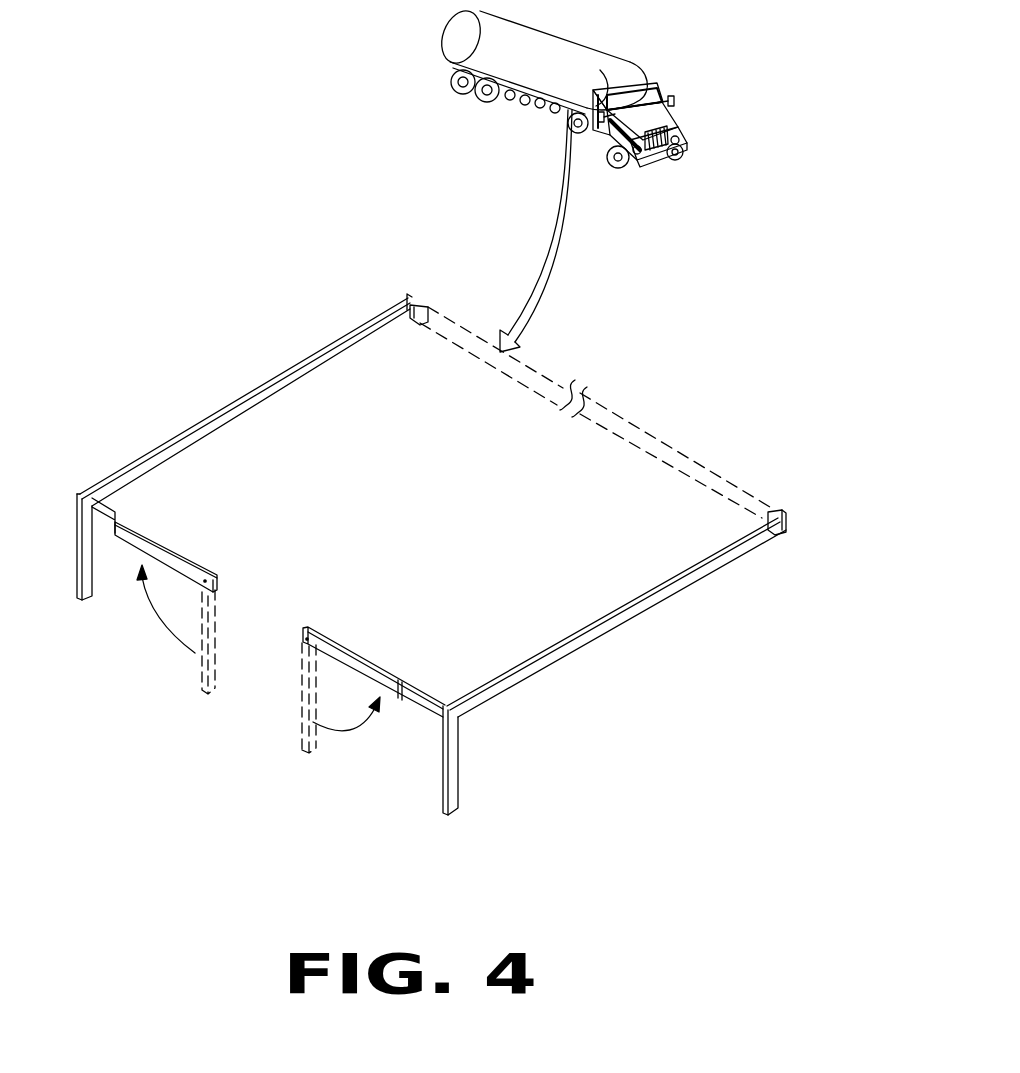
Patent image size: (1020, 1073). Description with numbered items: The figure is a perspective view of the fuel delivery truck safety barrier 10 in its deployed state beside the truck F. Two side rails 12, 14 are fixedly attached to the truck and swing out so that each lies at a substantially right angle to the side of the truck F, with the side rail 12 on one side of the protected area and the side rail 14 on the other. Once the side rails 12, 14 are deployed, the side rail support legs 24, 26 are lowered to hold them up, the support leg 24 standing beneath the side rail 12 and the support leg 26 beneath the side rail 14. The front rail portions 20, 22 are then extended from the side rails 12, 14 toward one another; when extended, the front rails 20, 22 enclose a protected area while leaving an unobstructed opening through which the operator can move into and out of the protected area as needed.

The fuel delivery truck safety barrier 10 is at (212, 312).
The side rail 12 is at (188, 442).
The side rail 14 is at (648, 595).
The front rail portion 20 is at (112, 515).
The front rail portion 22 is at (422, 700).
The side rail support leg 24 is at (88, 598).
The side rail support leg 26 is at (455, 770).
The truck F is at (537, 75).